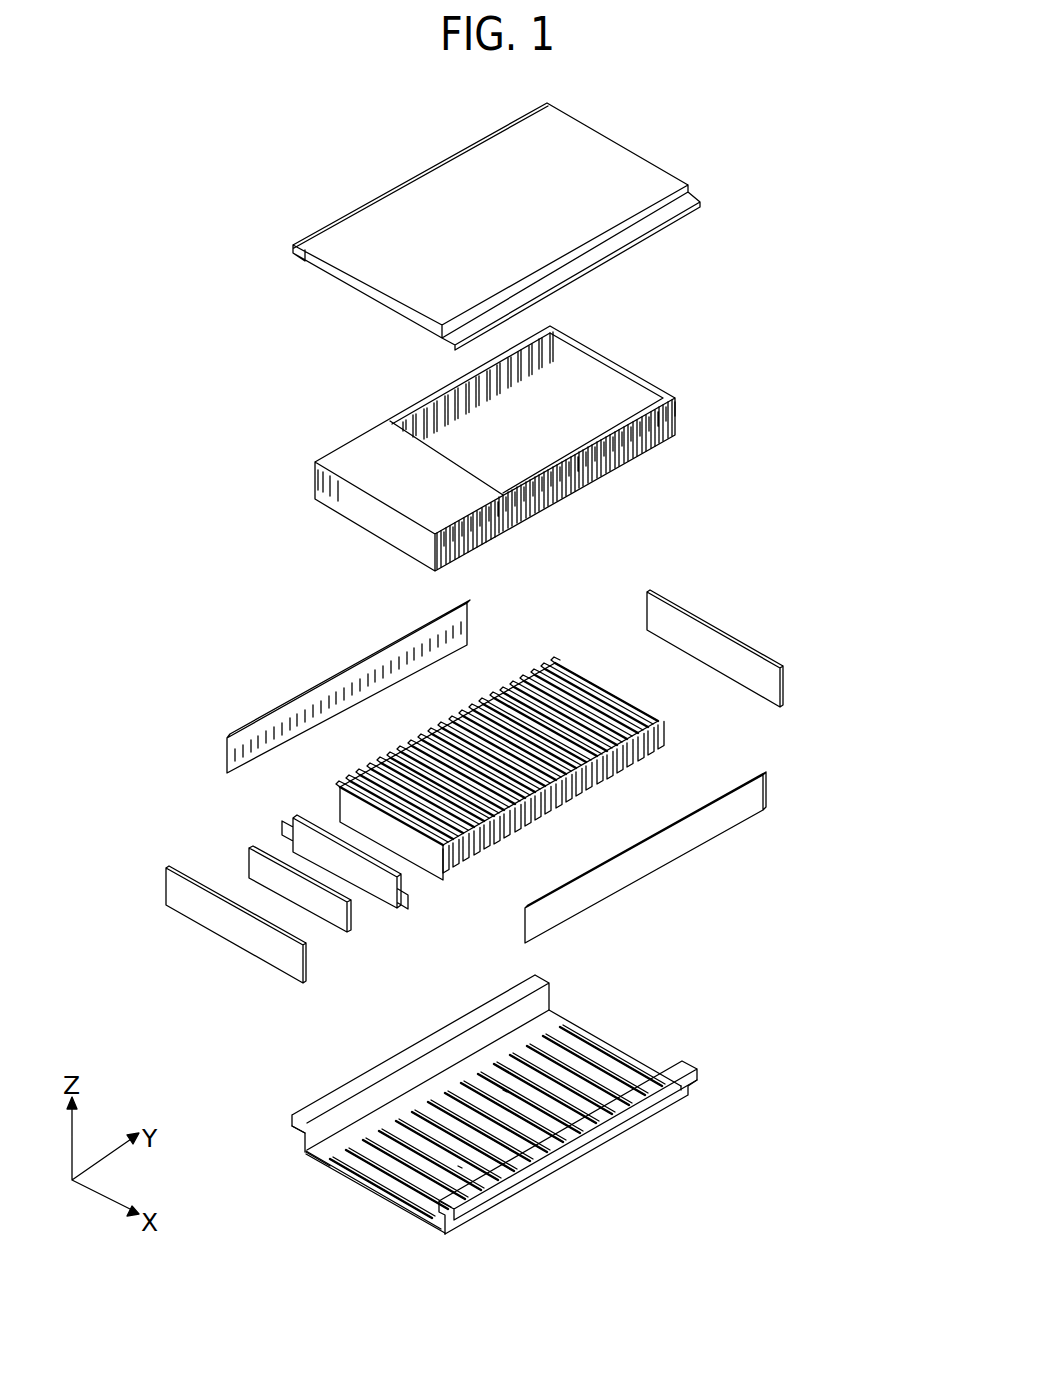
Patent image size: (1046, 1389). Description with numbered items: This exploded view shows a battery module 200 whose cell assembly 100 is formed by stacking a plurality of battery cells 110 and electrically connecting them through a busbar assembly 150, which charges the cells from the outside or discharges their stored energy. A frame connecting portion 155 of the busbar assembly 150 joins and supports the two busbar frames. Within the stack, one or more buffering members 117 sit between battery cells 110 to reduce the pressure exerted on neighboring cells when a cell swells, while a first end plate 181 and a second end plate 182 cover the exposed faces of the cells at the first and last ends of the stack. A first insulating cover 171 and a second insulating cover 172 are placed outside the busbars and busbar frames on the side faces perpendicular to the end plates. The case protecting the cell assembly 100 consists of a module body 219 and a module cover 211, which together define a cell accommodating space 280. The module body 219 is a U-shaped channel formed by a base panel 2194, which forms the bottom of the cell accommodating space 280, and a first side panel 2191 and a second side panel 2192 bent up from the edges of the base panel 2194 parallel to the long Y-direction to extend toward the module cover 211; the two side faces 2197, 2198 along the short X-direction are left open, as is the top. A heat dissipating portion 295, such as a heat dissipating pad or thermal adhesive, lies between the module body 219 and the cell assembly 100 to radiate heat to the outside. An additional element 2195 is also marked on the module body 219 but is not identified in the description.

The battery module 200 is at (211, 123).
The module cover 211 is at (630, 162).
The busbar assembly 150 is at (511, 446).
The frame connecting portion 155 is at (355, 445).
The first insulating cover 171 is at (335, 675).
The second insulating cover 172 is at (700, 835).
The cell assembly 100 is at (585, 692).
The battery cell 110 is at (301, 821).
The buffering member 117 is at (254, 849).
The first end plate 181 is at (214, 929).
The second end plate 182 is at (730, 637).
The module body 219 is at (511, 1110).
The first side panel 2191 is at (322, 1152).
The second side panel 2192 is at (605, 1135).
The base panel 2194 is at (462, 1168).
The first support rail 2195 is at (413, 1078).
The side face 2197 is at (338, 1163).
The side face 2198 is at (613, 1032).
The heat dissipating portion 295 is at (592, 1042).
The cell accommodating space 280 is at (506, 1092).